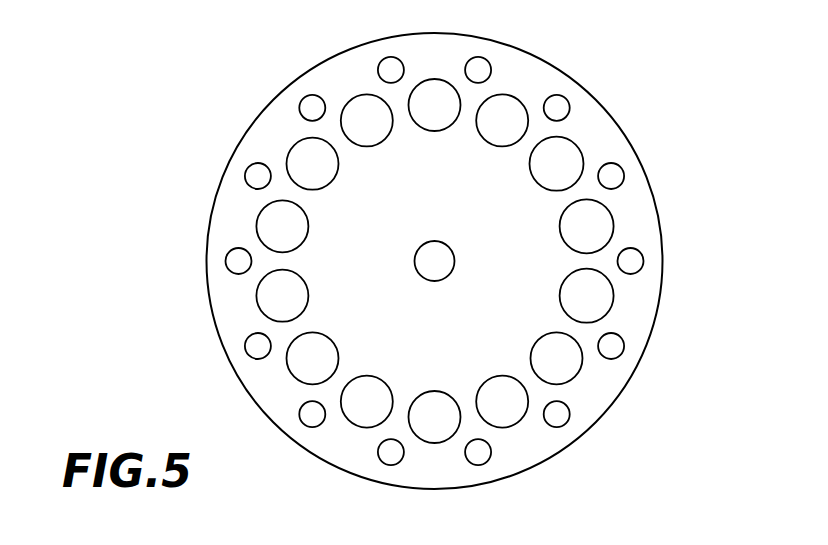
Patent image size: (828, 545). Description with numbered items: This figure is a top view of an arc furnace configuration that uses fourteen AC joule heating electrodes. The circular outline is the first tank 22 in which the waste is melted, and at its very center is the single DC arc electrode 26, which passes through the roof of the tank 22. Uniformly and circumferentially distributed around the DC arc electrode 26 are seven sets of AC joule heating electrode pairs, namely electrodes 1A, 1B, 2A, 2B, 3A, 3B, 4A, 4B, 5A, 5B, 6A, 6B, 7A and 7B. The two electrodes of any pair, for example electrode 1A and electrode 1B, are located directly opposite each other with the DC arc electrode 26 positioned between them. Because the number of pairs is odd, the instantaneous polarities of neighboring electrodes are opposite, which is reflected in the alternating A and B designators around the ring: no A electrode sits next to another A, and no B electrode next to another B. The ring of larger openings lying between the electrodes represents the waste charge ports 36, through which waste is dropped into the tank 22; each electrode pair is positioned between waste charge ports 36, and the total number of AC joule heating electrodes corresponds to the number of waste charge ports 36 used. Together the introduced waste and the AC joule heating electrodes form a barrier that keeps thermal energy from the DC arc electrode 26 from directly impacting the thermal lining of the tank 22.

The first tank 22 is at (608, 106).
The DC arc electrode 26 is at (440, 260).
The waste charge ports 36 is at (572, 310).
The AC joule heating electrode 1A is at (480, 68).
The AC joule heating electrode 1B is at (393, 452).
The AC joule heating electrode 2A is at (314, 417).
The AC joule heating electrode 2B is at (557, 106).
The AC joule heating electrode 3A is at (613, 174).
The AC joule heating electrode 3B is at (259, 346).
The AC joule heating electrode 4A is at (237, 262).
The AC joule heating electrode 4B is at (634, 259).
The AC joule heating electrode 5A is at (616, 346).
The AC joule heating electrode 5B is at (258, 174).
The AC joule heating electrode 6A is at (310, 107).
The AC joule heating electrode 6B is at (561, 413).
The AC joule heating electrode 7A is at (480, 452).
The AC joule heating electrode 7B is at (390, 68).